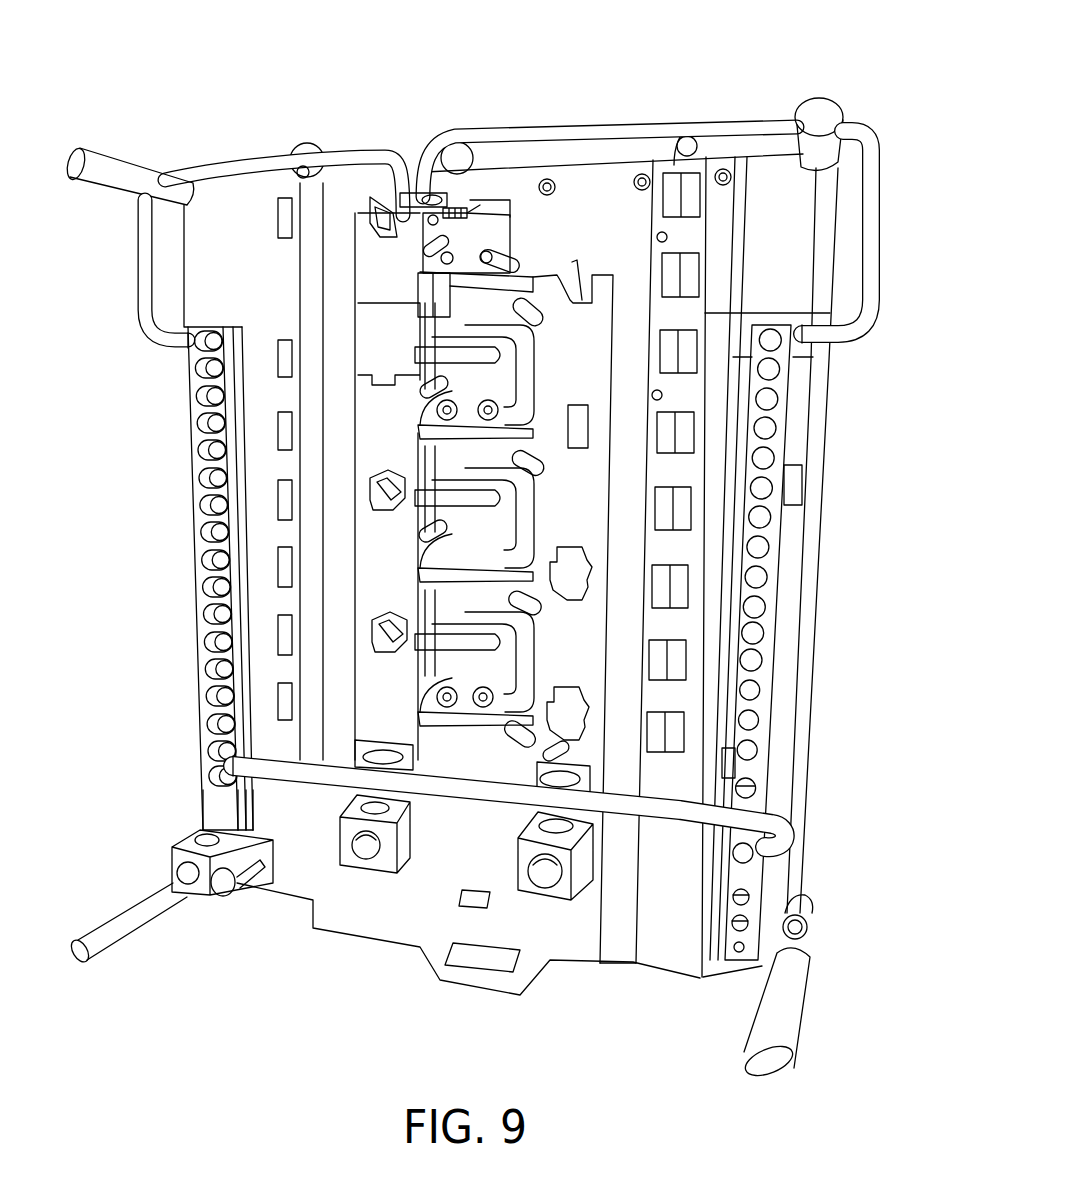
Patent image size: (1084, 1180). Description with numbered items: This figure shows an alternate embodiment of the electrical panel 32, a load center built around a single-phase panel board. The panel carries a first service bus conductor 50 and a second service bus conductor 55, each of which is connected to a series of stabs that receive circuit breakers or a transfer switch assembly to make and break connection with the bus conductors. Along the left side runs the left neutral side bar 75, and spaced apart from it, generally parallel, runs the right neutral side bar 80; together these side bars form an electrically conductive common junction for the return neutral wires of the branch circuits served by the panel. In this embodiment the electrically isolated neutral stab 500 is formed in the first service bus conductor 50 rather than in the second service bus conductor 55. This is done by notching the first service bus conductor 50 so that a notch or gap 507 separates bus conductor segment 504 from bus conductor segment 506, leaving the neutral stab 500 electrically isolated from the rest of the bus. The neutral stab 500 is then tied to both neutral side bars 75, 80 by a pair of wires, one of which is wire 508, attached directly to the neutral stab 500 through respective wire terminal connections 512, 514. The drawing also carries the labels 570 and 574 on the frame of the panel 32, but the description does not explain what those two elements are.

The electrical panel 32 is at (740, 80).
The first service bus conductor 50 is at (380, 565).
The second service bus conductor 55 is at (583, 622).
The left neutral side bar 75 is at (187, 413).
The right neutral side bar 80 is at (780, 412).
The electrically isolated neutral stab 500 is at (370, 213).
The bus conductor segment 504 is at (370, 690).
The bus conductor segment 506 is at (367, 233).
The notch or gap 507 is at (377, 353).
The wire 508 is at (242, 153).
The wire terminal connection 512 is at (423, 252).
The wire terminal connection 514 is at (478, 205).
The upper handle bar 570 is at (548, 140).
The handle loop 574 is at (773, 333).